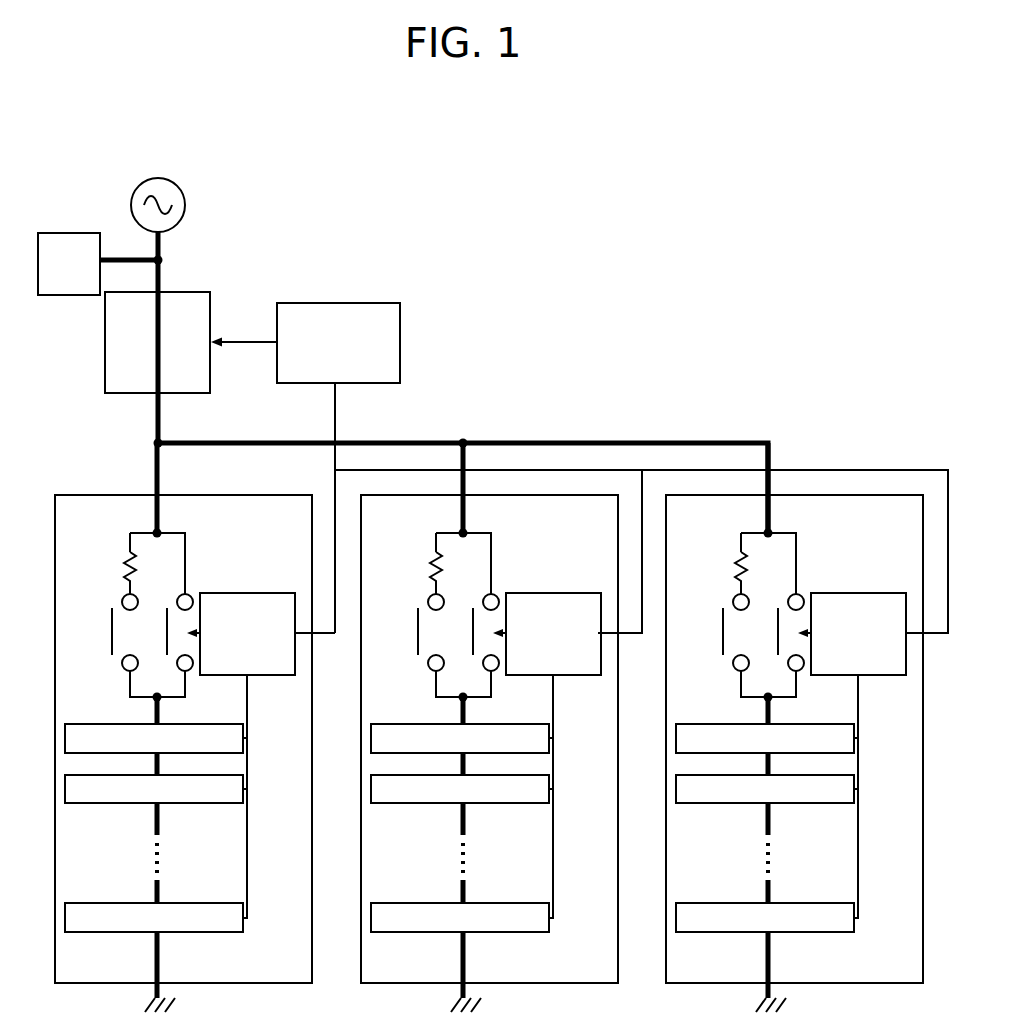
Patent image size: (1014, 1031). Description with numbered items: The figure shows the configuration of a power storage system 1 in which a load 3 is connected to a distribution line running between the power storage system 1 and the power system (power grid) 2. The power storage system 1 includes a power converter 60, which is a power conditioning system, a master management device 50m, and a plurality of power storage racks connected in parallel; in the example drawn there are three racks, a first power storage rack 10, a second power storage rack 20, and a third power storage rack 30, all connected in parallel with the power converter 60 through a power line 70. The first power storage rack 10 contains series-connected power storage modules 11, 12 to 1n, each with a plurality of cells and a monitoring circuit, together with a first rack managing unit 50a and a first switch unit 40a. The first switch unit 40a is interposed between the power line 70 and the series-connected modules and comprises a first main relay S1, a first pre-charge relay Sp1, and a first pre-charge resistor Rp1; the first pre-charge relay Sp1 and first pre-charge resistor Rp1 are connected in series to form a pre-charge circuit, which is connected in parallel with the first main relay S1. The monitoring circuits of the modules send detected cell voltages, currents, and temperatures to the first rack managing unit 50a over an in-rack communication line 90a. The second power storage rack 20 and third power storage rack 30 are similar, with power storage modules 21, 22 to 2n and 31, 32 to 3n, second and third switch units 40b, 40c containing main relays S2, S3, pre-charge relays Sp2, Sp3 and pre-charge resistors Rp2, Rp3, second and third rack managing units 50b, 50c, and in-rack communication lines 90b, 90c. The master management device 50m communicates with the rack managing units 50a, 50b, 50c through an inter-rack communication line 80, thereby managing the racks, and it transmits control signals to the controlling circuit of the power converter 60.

The power storage system 1 is at (607, 365).
The power system (power grid) 2 is at (163, 180).
The load 3 is at (51, 233).
The first power storage rack 10 is at (312, 768).
The second power storage rack 20 is at (505, 727).
The third power storage rack 30 is at (810, 727).
The power storage module 11 is at (176, 722).
The power storage module 12 is at (176, 773).
The power storage module 1n is at (176, 901).
The power storage module 21 is at (460, 728).
The power storage module 22 is at (460, 779).
The power storage module 2n is at (460, 907).
The power storage module 31 is at (765, 728).
The power storage module 32 is at (765, 779).
The power storage module 3n is at (765, 907).
The first switch unit 40a is at (160, 605).
The second switch unit 40b is at (466, 605).
The third switch unit 40c is at (771, 605).
The first rack managing unit 50a is at (252, 593).
The second rack managing unit 50b is at (567, 611).
The third rack managing unit 50c is at (873, 611).
The master management device 50m is at (340, 303).
The power converter 60 is at (190, 292).
The power line 70 is at (214, 443).
The inter-rack communication line 80 is at (445, 456).
The in-rack communication line 90a is at (249, 712).
The in-rack communication line 90b is at (578, 796).
The in-rack communication line 90c is at (883, 796).
The first pre-charge resistor Rp1 is at (97, 569).
The second pre-charge resistor Rp2 is at (403, 569).
The third pre-charge resistor Rp3 is at (708, 569).
The first pre-charge relay Sp1 is at (93, 631).
The second pre-charge relay Sp2 is at (399, 631).
The third pre-charge relay Sp3 is at (704, 631).
The first main relay S1 is at (152, 631).
The second main relay S2 is at (458, 631).
The third main relay S3 is at (763, 631).